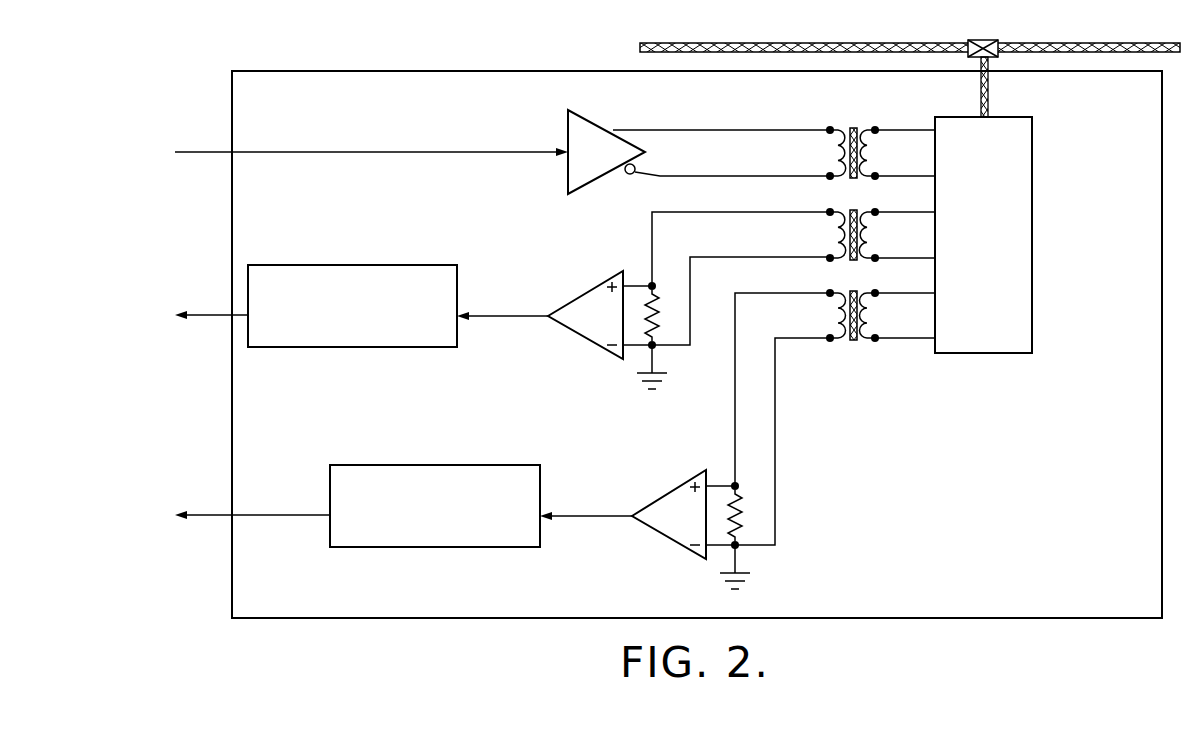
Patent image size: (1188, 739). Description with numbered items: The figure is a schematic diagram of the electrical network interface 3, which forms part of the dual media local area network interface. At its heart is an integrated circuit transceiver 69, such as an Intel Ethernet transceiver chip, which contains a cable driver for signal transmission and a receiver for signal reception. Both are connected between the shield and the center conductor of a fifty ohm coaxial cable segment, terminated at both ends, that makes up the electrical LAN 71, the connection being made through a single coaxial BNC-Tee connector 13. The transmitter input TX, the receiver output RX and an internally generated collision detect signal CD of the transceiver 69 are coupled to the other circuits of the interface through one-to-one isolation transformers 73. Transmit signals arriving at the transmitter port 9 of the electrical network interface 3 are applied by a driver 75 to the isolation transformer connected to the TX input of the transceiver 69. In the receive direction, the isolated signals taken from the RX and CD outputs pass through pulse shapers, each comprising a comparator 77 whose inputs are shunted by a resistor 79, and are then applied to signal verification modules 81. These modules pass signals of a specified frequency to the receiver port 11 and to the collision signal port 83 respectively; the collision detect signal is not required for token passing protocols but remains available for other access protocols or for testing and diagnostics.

The electrical network interface 3 is at (407, 71).
The transmitter port 9 is at (232, 152).
The receiver port 11 is at (232, 315).
The BNC-Tee connector 13 is at (985, 40).
The integrated circuit transceiver 69 is at (1032, 303).
The electrical LAN 71 is at (660, 44).
The isolation transformers 73 is at (855, 341).
The driver 75 is at (598, 124).
The comparators 77 is at (575, 298).
The resistors 79 is at (701, 435).
The signal verification modules 81 is at (365, 265).
The collision signal port 83 is at (232, 515).